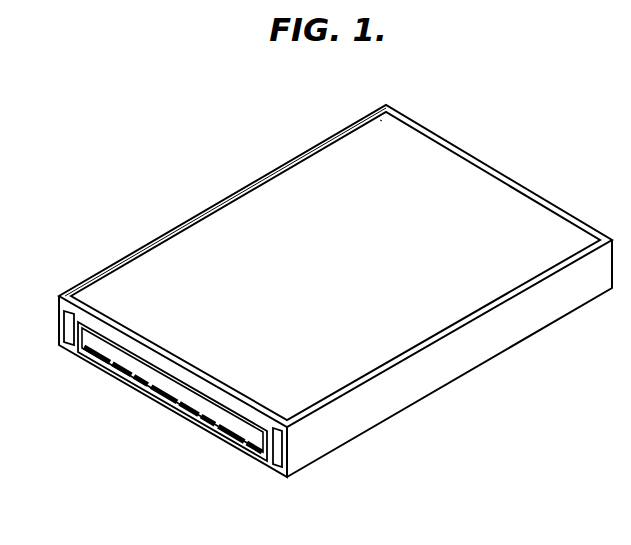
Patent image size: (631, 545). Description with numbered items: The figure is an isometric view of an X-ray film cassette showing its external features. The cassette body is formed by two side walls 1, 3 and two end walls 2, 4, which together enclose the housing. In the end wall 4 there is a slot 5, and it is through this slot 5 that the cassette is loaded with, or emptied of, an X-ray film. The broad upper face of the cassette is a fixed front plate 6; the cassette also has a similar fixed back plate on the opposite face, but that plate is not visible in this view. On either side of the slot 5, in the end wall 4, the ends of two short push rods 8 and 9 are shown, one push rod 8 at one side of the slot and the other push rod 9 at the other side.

The side wall 1 is at (412, 392).
The end wall 2 is at (462, 150).
The side wall 3 is at (332, 139).
The end wall 4 is at (163, 402).
The slot 5 is at (125, 355).
The fixed front plate 6 is at (477, 190).
The short push rod 8 is at (62, 343).
The short push rod 9 is at (277, 465).